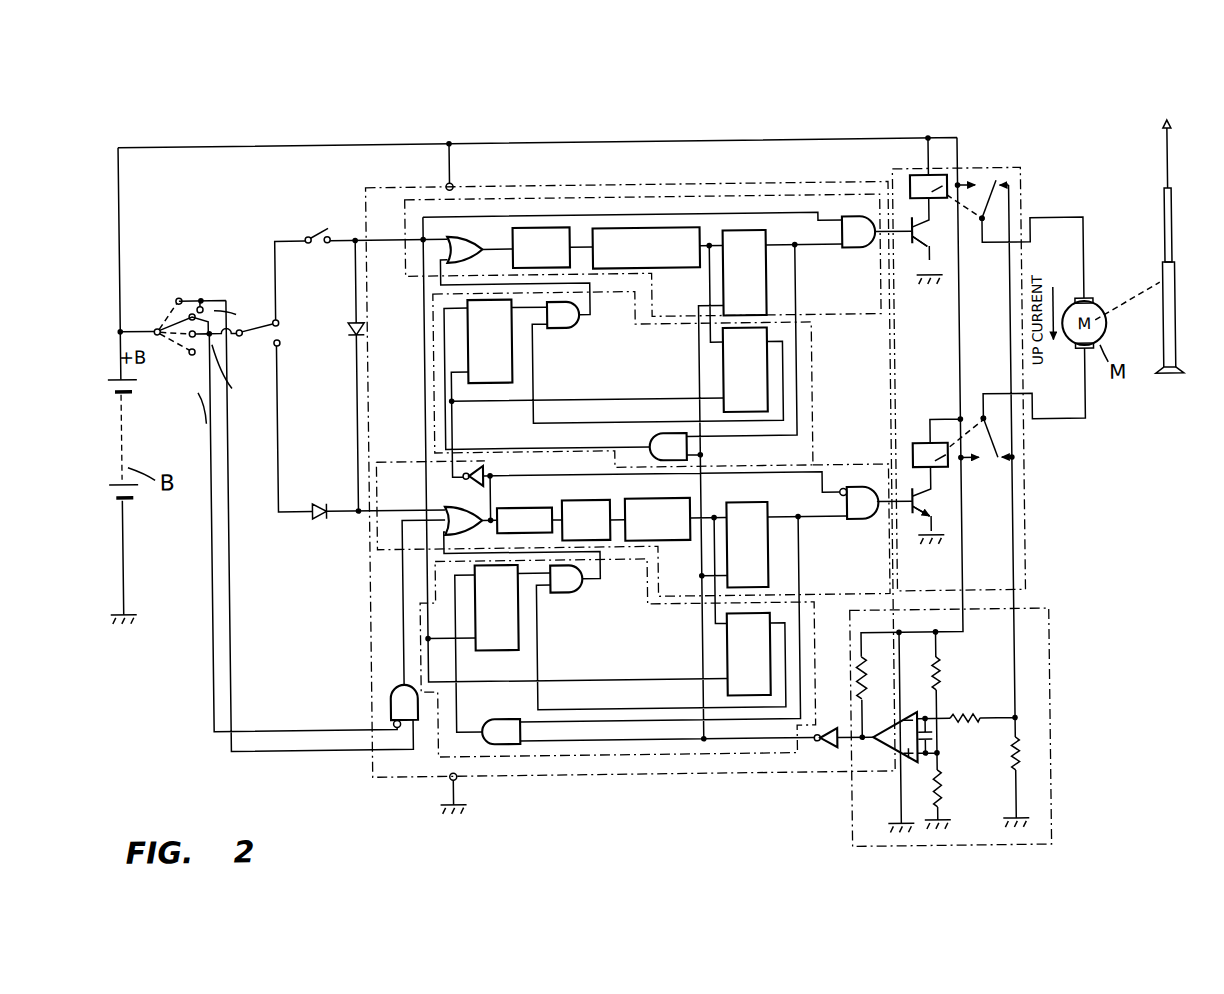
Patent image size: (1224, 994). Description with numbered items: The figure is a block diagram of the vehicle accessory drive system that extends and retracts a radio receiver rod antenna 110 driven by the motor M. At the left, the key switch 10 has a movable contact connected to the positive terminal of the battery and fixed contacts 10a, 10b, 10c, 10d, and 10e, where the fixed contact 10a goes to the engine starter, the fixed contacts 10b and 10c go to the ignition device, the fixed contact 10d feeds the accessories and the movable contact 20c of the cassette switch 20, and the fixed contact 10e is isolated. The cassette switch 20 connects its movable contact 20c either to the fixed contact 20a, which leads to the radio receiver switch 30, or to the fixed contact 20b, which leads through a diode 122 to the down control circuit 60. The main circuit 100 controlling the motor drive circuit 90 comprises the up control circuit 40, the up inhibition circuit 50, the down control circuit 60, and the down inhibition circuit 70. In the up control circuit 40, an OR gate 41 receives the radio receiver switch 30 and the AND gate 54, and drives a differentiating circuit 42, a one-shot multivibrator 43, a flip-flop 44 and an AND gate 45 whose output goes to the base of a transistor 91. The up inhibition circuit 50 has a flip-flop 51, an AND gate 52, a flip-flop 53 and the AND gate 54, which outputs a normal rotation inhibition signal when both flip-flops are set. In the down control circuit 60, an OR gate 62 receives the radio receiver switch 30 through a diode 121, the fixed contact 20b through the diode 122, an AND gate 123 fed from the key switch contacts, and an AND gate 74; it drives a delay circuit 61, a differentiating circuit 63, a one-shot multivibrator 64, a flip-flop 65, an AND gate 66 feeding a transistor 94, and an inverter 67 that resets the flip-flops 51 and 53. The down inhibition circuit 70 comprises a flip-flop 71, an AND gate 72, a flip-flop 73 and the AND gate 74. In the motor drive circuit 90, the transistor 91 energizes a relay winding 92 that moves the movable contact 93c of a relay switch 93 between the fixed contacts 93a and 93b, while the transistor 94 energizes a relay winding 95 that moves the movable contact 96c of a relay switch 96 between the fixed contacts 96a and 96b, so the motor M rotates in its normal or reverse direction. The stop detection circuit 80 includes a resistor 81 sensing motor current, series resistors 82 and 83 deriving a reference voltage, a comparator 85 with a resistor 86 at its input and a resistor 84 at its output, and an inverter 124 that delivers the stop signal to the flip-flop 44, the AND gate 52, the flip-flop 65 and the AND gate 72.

The key switch 10 is at (160, 296).
The fixed contact 10a is at (183, 293).
The fixed contact 10b is at (204, 302).
The fixed contact 10c is at (172, 318).
The fixed contact 10d is at (174, 340).
The fixed contact 10e is at (194, 351).
The cassette switch 20 is at (287, 329).
The fixed contact 20a is at (274, 314).
The fixed contact 20b is at (282, 345).
The movable contact 20c is at (244, 333).
The radio receiver switch 30 is at (317, 227).
The up control circuit 40 is at (632, 198).
The OR gate 41 is at (469, 233).
The differentiating circuit 42 is at (556, 227).
The one-shot multivibrator 43 is at (668, 228).
The flip-flop 44 is at (752, 231).
The AND gate 45 is at (866, 220).
The up inhibition circuit 50 is at (814, 376).
The flip-flop 51 is at (724, 354).
The AND gate 52 is at (654, 434).
The flip-flop 53 is at (514, 369).
The AND gate 54 is at (566, 330).
The down control circuit 60 is at (374, 538).
The delay circuit 61 is at (528, 506).
The OR gate 62 is at (442, 510).
The differentiating circuit 63 is at (592, 500).
The one-shot multivibrator 64 is at (645, 498).
The flip-flop 65 is at (746, 504).
The AND gate 66 is at (870, 490).
The inverter 67 is at (470, 482).
The down inhibition circuit 70 is at (584, 757).
The flip-flop 71 is at (725, 644).
The AND gate 72 is at (499, 718).
The flip-flop 73 is at (516, 632).
The AND gate 74 is at (578, 592).
The stop detection circuit 80 is at (1024, 613).
The resistor 81 is at (1014, 765).
The resistor 82 is at (938, 682).
The resistor 83 is at (938, 794).
The resistor 84 is at (862, 681).
The comparator 85 is at (876, 762).
The resistor 86 is at (955, 719).
The motor drive circuit 90 is at (1001, 167).
The transistor 91 is at (914, 254).
The relay winding 92 is at (918, 178).
The relay switch 93 is at (1000, 202).
The fixed contact 93a is at (972, 186).
The fixed contact 93b is at (1014, 180).
The movable contact 93c is at (990, 218).
The transistor 94 is at (912, 519).
The relay winding 95 is at (916, 444).
The relay switch 96 is at (995, 441).
The fixed contact 96a is at (968, 470).
The fixed contact 96b is at (1022, 462).
The movable contact 96c is at (986, 414).
The main circuit 100 is at (524, 184).
The rod antenna 110 is at (1182, 322).
The diode 121 is at (346, 327).
The diode 122 is at (320, 500).
The AND gate 123 is at (388, 698).
The inverter 124 is at (822, 753).